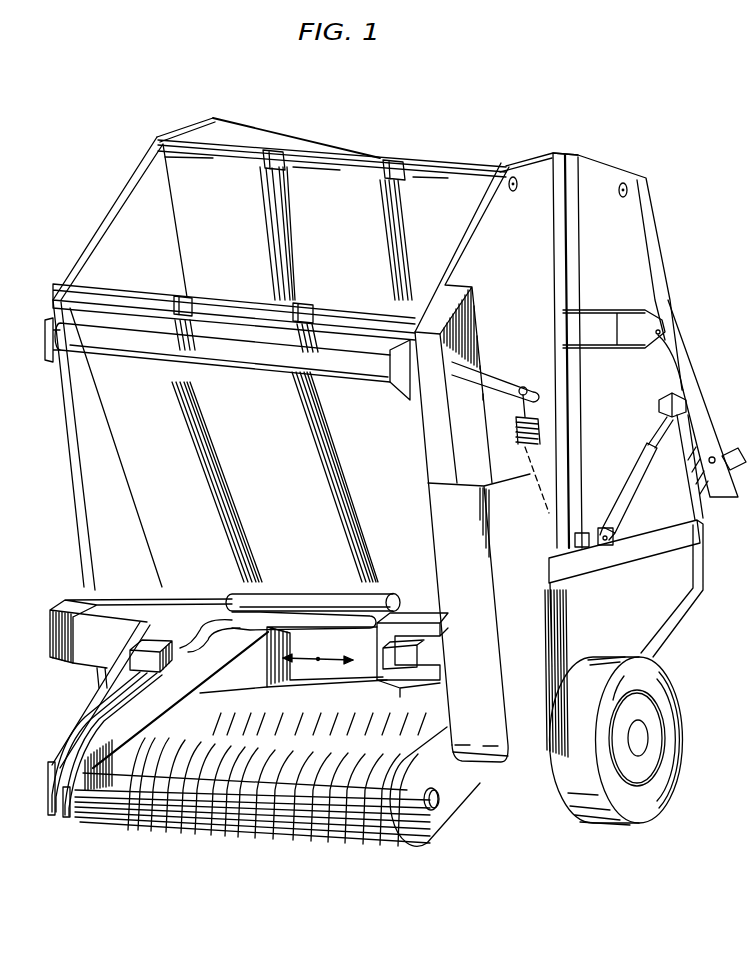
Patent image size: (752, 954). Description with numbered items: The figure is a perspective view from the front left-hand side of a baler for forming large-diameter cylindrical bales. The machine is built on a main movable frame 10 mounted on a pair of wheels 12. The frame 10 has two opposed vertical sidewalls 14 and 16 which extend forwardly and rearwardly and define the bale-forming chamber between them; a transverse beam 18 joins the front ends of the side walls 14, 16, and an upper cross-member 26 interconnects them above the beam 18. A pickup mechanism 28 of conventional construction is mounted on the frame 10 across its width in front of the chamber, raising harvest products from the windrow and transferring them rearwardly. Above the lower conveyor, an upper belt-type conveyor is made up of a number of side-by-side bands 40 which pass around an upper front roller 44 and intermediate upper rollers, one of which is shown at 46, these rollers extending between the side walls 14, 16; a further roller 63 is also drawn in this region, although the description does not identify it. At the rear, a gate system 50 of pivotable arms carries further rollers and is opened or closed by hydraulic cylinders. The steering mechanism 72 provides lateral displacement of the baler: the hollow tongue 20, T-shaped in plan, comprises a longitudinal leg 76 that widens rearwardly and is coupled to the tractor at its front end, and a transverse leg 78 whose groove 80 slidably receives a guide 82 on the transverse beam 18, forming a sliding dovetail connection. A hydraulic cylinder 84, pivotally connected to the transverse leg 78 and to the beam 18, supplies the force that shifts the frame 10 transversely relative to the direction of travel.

The main movable frame 10 is at (112, 197).
The wheels 12 is at (614, 657).
The left vertical sidewall 14 is at (526, 241).
The right vertical sidewall 16 is at (147, 226).
The transverse beam 18 is at (407, 612).
The hollow tongue 20 is at (115, 763).
The upper cross-member 26 is at (110, 298).
The pickup mechanism 28 is at (263, 837).
The bands or belts 40 is at (182, 449).
The upper front roller 44 is at (181, 297).
The intermediate upper roller 46 is at (395, 163).
The rear gate system 50 is at (697, 389).
The belt roller 63 is at (230, 304).
The steering mechanism 72 is at (400, 682).
The longitudinal leg 76 is at (170, 728).
The transverse leg 78 is at (73, 607).
The groove 80 is at (366, 655).
The guide 82 is at (405, 657).
The hydraulic cylinder 84 is at (233, 594).